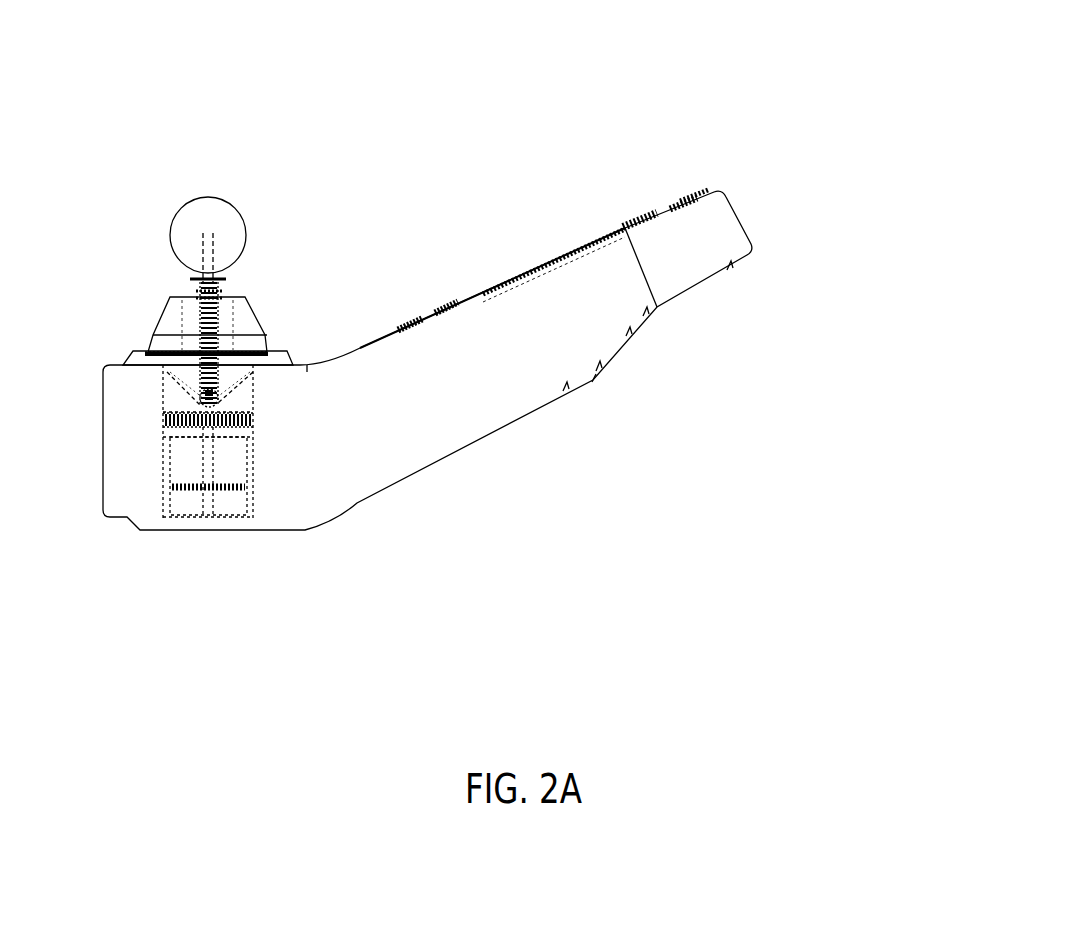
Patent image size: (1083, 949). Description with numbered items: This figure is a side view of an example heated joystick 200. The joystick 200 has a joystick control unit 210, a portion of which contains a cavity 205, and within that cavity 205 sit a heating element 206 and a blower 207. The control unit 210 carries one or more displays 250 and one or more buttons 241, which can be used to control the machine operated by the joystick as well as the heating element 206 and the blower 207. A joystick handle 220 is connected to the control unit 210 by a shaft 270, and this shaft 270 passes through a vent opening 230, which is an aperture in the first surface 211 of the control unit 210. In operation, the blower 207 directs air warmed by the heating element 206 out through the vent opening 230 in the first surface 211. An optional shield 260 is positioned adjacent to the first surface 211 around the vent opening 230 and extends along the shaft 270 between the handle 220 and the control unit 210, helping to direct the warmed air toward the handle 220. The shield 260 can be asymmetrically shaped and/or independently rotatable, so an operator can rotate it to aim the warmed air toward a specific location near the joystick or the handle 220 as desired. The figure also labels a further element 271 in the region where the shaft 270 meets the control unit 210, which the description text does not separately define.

The joystick 200 is at (104, 78).
The joystick control unit 210 is at (537, 334).
The joystick handle 220 is at (207, 212).
The shaft 270 is at (218, 318).
The shield 260 is at (262, 330).
The vent opening 230 is at (190, 348).
The first surface 211 is at (150, 350).
The cavity 205 is at (185, 407).
The pivot joint 271 is at (252, 397).
The heating element 206 is at (232, 418).
The blower 207 is at (233, 460).
The display 250 is at (554, 262).
The button 241 is at (682, 192).